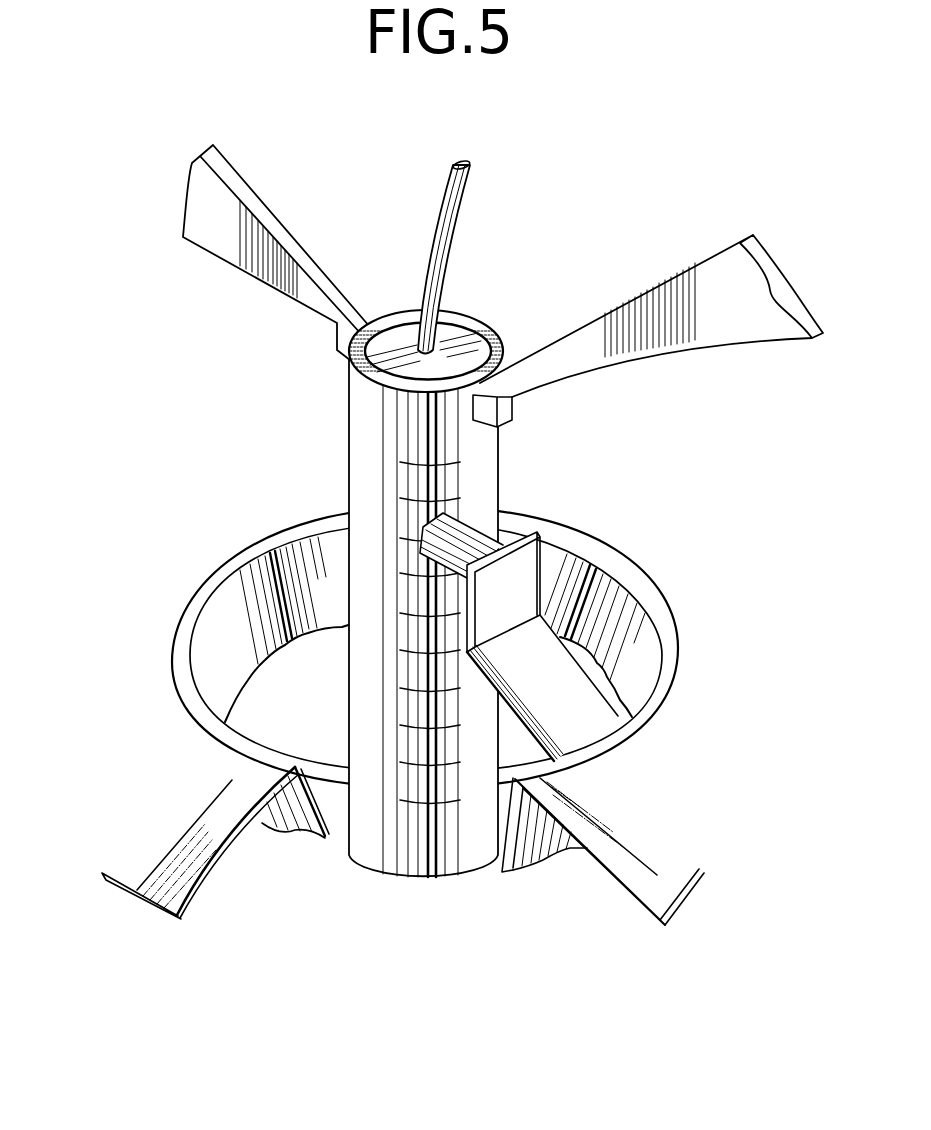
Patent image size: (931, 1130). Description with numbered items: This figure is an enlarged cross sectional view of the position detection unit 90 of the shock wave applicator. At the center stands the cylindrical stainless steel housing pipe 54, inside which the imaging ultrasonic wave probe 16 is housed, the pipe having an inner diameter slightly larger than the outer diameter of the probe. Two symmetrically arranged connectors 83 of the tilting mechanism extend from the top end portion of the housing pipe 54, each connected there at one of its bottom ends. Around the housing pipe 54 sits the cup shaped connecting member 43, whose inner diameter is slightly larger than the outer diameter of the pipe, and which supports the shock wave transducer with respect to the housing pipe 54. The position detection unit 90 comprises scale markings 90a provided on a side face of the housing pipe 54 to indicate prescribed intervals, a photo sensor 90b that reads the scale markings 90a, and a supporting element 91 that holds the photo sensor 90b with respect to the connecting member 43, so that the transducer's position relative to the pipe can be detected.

The imaging ultrasonic wave probe 16 is at (455, 330).
The connecting member 43 is at (545, 848).
The housing pipe 54 is at (347, 673).
The connectors 83 is at (292, 230).
The position detection unit 90 is at (547, 503).
The scale markings 90a is at (407, 498).
The photo sensor 90b is at (420, 555).
The supporting element 91 is at (570, 673).